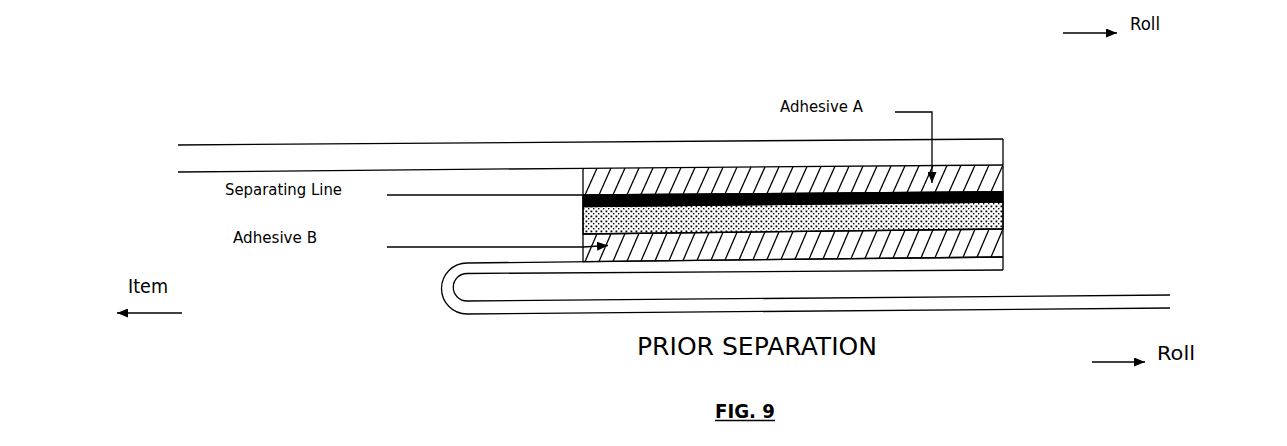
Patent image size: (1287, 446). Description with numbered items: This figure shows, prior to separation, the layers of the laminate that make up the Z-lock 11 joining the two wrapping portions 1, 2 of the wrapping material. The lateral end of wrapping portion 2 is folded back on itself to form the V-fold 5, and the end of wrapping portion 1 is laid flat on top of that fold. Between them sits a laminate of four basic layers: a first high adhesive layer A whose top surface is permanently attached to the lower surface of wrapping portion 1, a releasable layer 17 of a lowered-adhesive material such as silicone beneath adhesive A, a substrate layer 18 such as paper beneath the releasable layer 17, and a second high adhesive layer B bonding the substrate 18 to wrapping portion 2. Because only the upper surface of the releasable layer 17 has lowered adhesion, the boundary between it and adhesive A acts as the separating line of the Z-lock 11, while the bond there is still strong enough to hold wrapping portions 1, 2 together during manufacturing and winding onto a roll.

The wrapping portion 1 is at (700, 127).
The wrapping portion 2 is at (973, 260).
The V-fold 5 is at (425, 313).
The Z-lock 11 is at (908, 98).
The releasable layer 17 is at (906, 182).
The substrate layer 18 is at (978, 218).